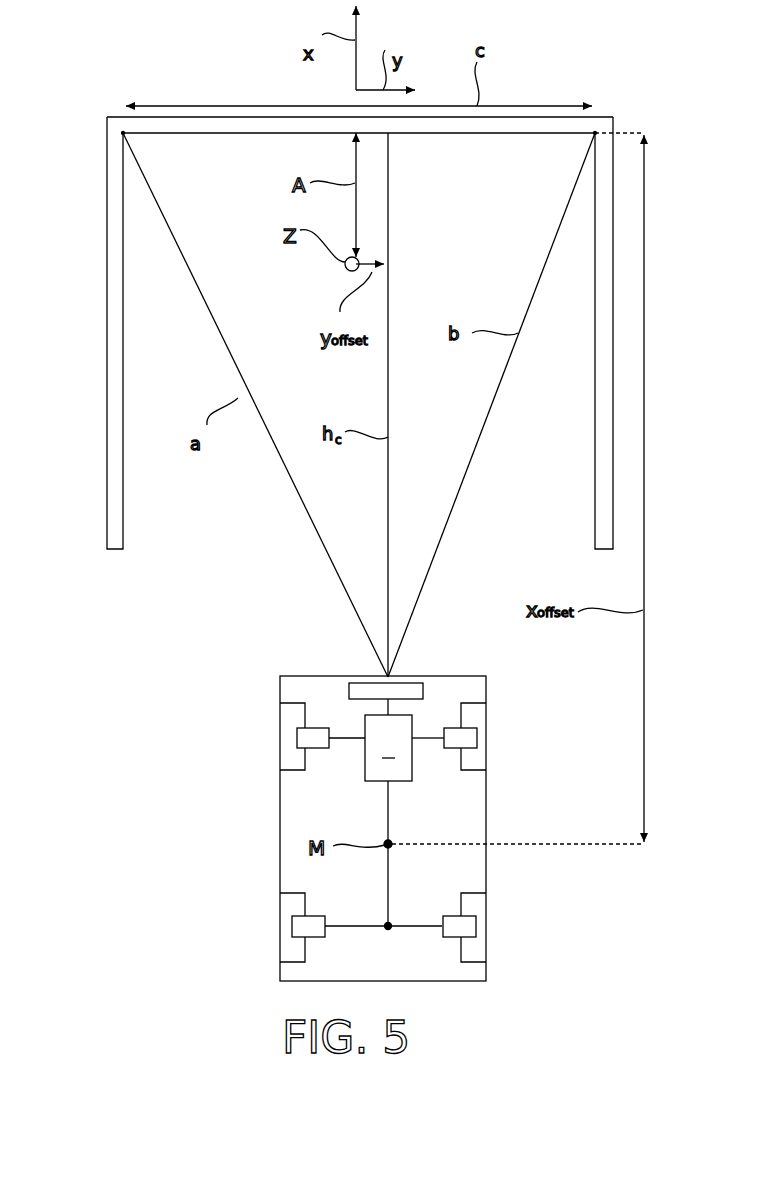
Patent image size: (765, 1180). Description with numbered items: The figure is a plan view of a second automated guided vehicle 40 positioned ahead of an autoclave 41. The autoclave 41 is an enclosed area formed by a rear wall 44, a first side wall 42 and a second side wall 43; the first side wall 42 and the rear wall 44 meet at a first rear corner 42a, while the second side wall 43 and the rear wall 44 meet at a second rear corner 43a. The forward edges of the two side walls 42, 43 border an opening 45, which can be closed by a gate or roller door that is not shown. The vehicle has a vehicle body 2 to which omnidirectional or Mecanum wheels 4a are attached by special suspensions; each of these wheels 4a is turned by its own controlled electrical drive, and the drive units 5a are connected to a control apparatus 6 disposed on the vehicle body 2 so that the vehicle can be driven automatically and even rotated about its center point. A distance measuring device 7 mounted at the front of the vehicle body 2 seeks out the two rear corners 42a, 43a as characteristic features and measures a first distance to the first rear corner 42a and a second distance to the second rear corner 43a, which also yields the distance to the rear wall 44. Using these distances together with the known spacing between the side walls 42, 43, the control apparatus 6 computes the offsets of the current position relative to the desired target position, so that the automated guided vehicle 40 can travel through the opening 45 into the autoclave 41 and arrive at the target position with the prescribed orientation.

The vehicle body 2 is at (280, 828).
The omnidirectional wheels 4a is at (283, 760).
The wheel sensors 5a is at (316, 746).
The control apparatus 6 is at (384, 814).
The distance measuring device 7 is at (365, 692).
The second automated guided vehicle 40 is at (198, 866).
The autoclave 41 is at (166, 81).
The first side wall 42 is at (106, 298).
The first rear corner 42a is at (130, 137).
The second side wall 43 is at (594, 407).
The second rear corner 43a is at (593, 135).
The rear wall 44 is at (437, 133).
The opening 45 is at (157, 552).